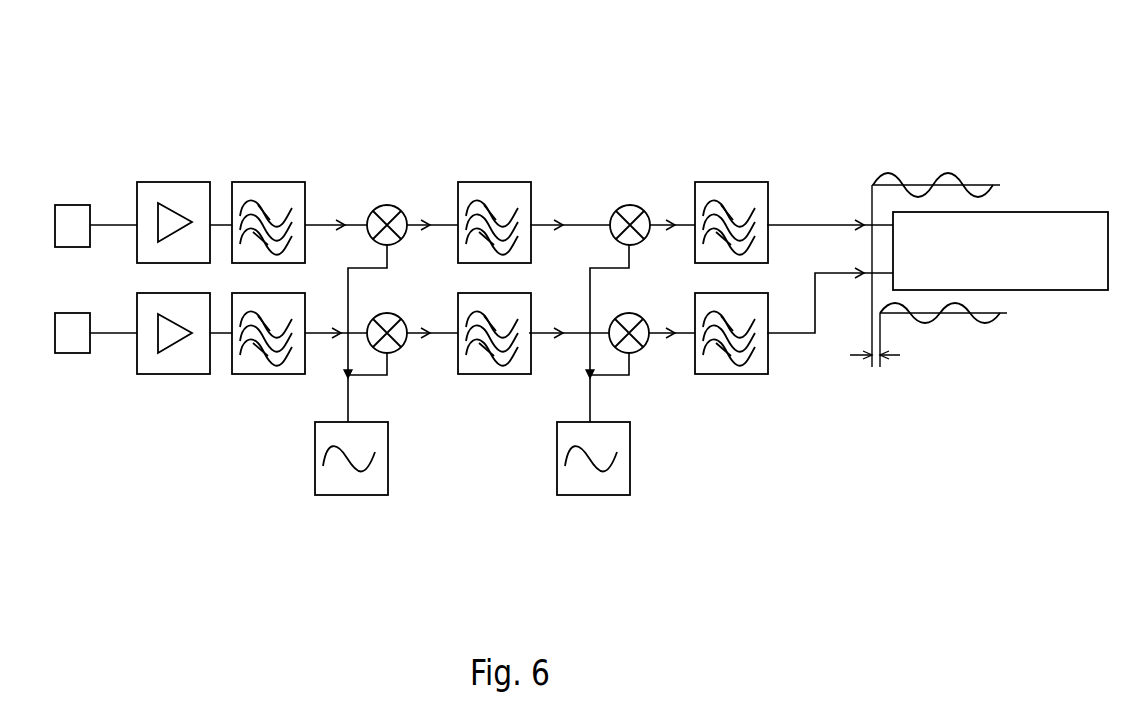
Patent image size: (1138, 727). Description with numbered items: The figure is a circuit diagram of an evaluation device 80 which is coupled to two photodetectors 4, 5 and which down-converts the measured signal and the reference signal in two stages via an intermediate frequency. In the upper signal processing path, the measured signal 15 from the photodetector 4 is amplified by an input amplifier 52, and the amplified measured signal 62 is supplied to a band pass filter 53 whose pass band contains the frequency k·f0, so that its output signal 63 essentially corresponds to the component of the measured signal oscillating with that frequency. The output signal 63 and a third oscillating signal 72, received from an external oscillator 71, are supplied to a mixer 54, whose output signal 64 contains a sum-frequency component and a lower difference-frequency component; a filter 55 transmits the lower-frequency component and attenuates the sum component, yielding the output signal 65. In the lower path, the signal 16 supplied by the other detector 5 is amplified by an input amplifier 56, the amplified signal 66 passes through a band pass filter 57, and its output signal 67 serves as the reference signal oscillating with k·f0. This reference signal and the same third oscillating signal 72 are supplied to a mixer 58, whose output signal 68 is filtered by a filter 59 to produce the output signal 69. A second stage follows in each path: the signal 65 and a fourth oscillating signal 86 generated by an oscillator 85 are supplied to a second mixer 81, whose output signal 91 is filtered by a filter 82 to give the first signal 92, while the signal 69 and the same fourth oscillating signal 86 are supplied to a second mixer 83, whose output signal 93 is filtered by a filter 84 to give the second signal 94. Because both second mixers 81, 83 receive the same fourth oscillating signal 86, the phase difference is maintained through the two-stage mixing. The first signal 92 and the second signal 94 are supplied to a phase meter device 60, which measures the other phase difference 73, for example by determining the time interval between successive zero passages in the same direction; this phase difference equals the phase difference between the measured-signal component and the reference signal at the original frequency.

The photodetector 4 is at (68, 205).
The other detector 5 is at (62, 353).
The measured signal 15 is at (108, 225).
The signal supplied by the other detector 16 is at (108, 333).
The input amplifier 52 is at (167, 182).
The input amplifier 56 is at (167, 369).
The band pass filter 53 is at (270, 182).
The band pass filter 57 is at (268, 369).
The mixer 54 is at (393, 206).
The mixer 58 is at (398, 351).
The filter 55 is at (493, 182).
The filter 59 is at (520, 369).
The amplified measured signal 62 is at (222, 225).
The output signal of the band pass filter 63 is at (348, 225).
The output signal of the mixer 64 is at (433, 225).
The output signal of the filter 65 is at (567, 225).
The amplified signal 66 is at (222, 333).
The output signal of the band pass filter 67 is at (322, 333).
The output signal of the mixer 68 is at (433, 333).
The output signal of the filter 69 is at (570, 333).
The external oscillator 71 is at (388, 475).
The third oscillating signal 72 is at (348, 403).
The other phase difference 73 is at (893, 358).
The evaluation device 80 is at (870, 65).
The second mixer 81 is at (637, 206).
The second mixer 83 is at (643, 352).
The filter 82 is at (735, 182).
The filter 84 is at (766, 370).
The oscillator 85 is at (629, 475).
The fourth oscillating signal 86 is at (590, 403).
The output signal of the second mixer 91 is at (678, 225).
The first signal 92 is at (812, 225).
The output signal of the second mixer 93 is at (687, 333).
The second signal 94 is at (815, 333).
The phase meter device 60 is at (1087, 290).